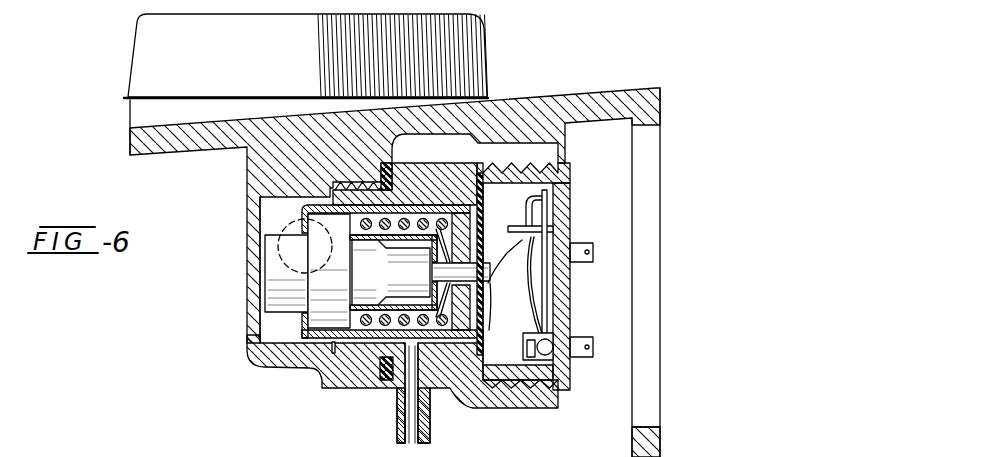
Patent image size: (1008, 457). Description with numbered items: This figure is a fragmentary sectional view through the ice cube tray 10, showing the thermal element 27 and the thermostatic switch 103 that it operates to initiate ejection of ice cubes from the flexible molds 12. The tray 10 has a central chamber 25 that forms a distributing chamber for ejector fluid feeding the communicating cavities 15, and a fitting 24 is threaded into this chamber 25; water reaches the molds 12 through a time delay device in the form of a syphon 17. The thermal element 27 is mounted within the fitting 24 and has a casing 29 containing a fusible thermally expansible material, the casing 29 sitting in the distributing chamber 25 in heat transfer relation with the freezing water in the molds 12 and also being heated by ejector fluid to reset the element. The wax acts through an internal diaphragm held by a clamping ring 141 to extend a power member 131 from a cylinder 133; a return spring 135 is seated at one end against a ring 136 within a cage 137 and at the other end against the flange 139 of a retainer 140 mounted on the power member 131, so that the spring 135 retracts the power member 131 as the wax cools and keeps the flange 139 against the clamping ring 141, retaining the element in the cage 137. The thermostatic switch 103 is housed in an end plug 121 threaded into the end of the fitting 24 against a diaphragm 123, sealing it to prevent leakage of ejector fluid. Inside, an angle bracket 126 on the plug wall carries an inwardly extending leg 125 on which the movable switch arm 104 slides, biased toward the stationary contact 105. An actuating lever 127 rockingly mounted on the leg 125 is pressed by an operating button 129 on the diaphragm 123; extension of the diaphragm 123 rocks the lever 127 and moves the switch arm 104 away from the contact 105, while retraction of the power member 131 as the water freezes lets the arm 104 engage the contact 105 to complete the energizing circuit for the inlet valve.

The tray 10 is at (130, 113).
The flexible molds 12 is at (143, 46).
The communicating cavities 15 is at (297, 227).
The syphon 17 is at (478, 405).
The fitting 24 is at (528, 412).
The central chamber 25 is at (277, 338).
The thermal element 27 is at (255, 324).
The casing 29 is at (280, 272).
The thermostatic switch 103 is at (550, 337).
The movable switch arm 104 is at (548, 289).
The stationary contact 105 is at (567, 358).
The end plug 121 is at (571, 200).
The diaphragm 123 is at (483, 217).
The inwardly extending leg 125 is at (510, 229).
The angle bracket 126 is at (550, 227).
The actuating lever 127 is at (503, 260).
The operating button 129 is at (492, 293).
The power member 131 is at (482, 322).
The cylinder 133 is at (400, 303).
The return spring 135 is at (405, 318).
The ring 136 is at (441, 355).
The cage 137 is at (303, 345).
The flange 139 is at (345, 343).
The retainer 140 is at (413, 232).
The clamping ring 141 is at (327, 227).